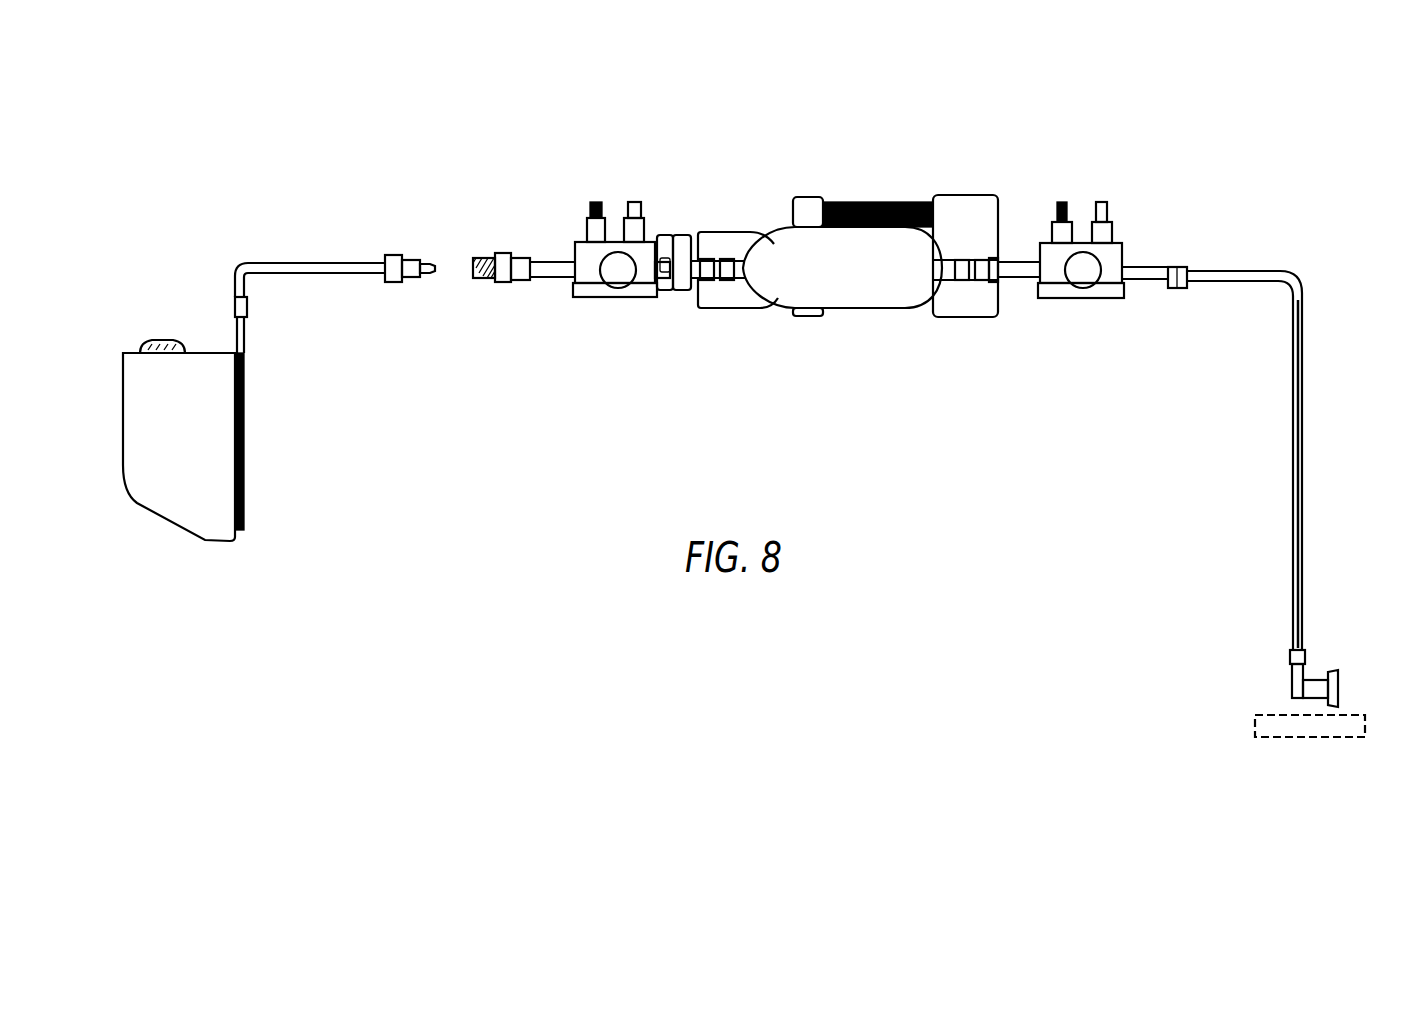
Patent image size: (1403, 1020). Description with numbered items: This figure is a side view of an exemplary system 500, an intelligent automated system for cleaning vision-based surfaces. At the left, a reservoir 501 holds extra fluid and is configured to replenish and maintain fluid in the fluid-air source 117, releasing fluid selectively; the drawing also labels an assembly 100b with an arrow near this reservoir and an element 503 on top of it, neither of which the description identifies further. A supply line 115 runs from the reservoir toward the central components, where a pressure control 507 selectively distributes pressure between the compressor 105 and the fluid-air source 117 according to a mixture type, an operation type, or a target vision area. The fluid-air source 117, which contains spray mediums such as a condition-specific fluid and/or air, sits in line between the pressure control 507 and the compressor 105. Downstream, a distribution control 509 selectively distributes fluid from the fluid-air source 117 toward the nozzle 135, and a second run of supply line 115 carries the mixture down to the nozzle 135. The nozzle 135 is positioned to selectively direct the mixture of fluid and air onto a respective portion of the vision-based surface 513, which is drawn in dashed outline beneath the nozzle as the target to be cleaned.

The system 500 is at (120, 75).
The fluid delivery assembly 100b is at (222, 188).
The supply line 115 is at (316, 262).
The reservoir 501 is at (123, 433).
The reservoir cap 503 is at (163, 340).
The pressure control 507 is at (582, 240).
The compressor 105 is at (1000, 195).
The fluid-air source 117 is at (875, 295).
The distribution control 509 is at (1122, 240).
The nozzle 135 is at (1340, 688).
The vision-based surface 513 is at (1343, 737).